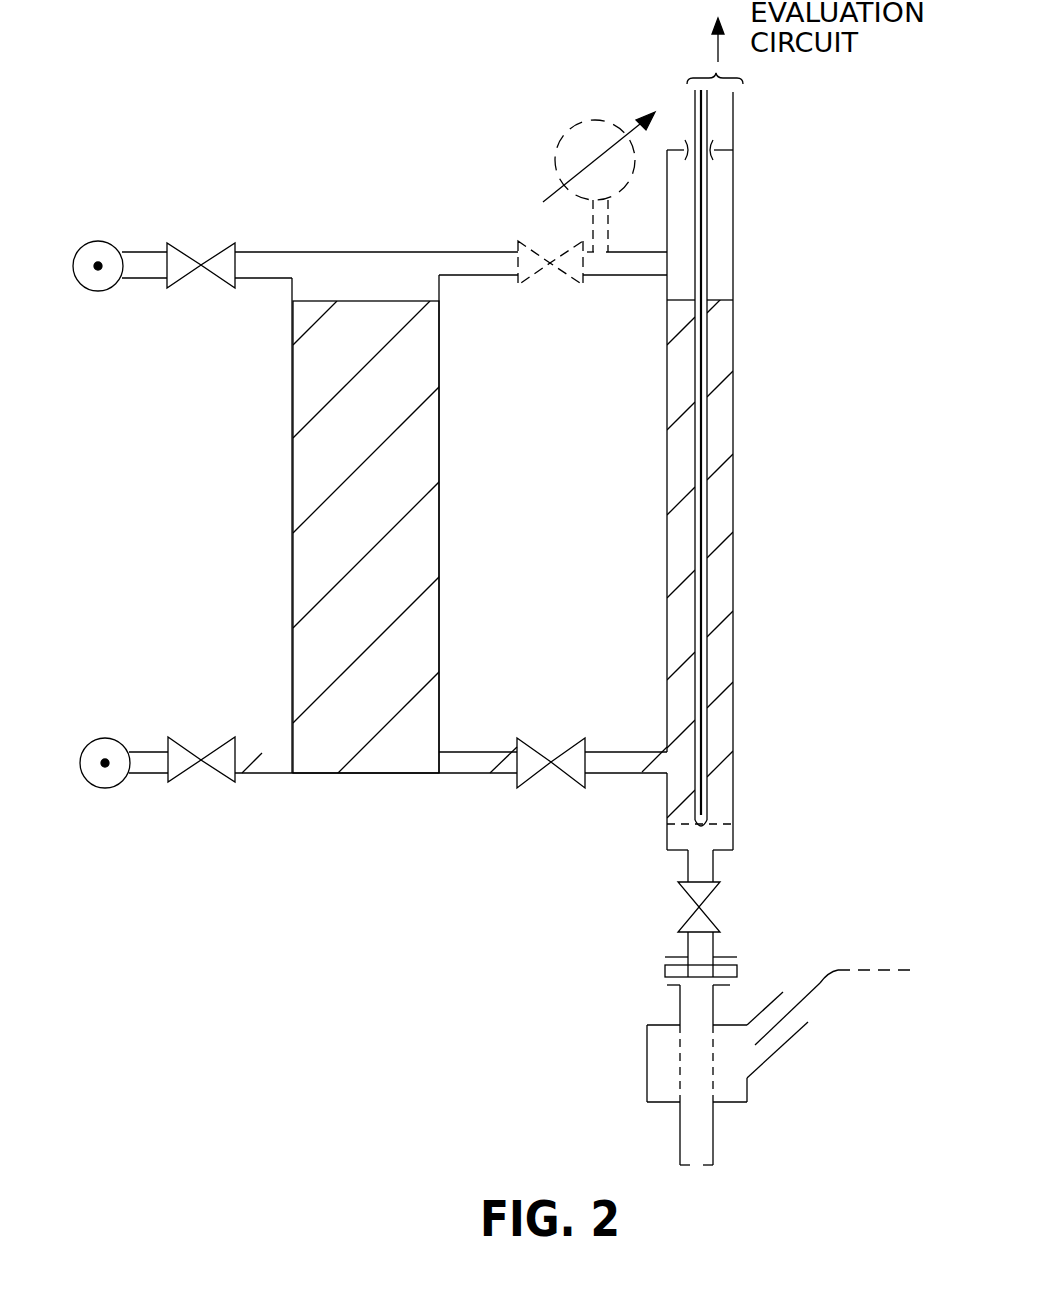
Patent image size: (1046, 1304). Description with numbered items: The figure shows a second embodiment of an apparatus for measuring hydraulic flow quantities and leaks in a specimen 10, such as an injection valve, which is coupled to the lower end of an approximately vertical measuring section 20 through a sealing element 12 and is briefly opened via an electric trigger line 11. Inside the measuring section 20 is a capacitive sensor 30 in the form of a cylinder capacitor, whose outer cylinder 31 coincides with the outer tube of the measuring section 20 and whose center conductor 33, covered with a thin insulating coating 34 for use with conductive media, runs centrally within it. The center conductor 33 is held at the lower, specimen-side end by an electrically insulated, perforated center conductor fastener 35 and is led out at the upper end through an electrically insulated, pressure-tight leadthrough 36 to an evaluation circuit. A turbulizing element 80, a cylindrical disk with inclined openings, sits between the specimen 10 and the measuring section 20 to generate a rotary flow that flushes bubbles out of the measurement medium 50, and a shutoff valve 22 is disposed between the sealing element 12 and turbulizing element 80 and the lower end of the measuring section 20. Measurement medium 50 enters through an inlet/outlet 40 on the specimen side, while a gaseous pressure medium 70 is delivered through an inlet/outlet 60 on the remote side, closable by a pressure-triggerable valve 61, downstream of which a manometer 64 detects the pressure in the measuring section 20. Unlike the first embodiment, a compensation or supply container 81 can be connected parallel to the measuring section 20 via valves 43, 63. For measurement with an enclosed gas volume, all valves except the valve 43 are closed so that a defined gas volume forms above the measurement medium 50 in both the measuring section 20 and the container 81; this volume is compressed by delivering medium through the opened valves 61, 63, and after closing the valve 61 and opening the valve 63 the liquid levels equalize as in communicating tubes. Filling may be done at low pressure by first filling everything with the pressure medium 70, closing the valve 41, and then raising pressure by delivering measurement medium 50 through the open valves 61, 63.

The specimen 10 is at (660, 1072).
The electric trigger line 11 is at (808, 998).
The sealing element 12 is at (648, 990).
The measuring section 20 is at (725, 672).
The shutoff valve 22 is at (705, 898).
The capacitive sensor 30 is at (748, 527).
The outer cylinder 31 is at (735, 585).
The center conductor 33 is at (705, 460).
The electrically insulating coating 34 is at (702, 528).
The center conductor fastener 35 is at (715, 812).
The pressure-tight leadthrough 36 is at (728, 132).
The inlet/outlet for measurement medium 40 is at (487, 269).
The valve 41 is at (240, 258).
The valve 43 is at (570, 272).
The measurement medium 50 is at (672, 425).
The inlet/outlet for pressure medium 60 is at (480, 767).
The valve 61 is at (192, 770).
The valve 63 is at (540, 770).
The manometer 64 is at (592, 124).
The pressure medium 70 is at (363, 256).
The turbulizing element 80 is at (698, 972).
The compensation or supply container 81 is at (313, 466).